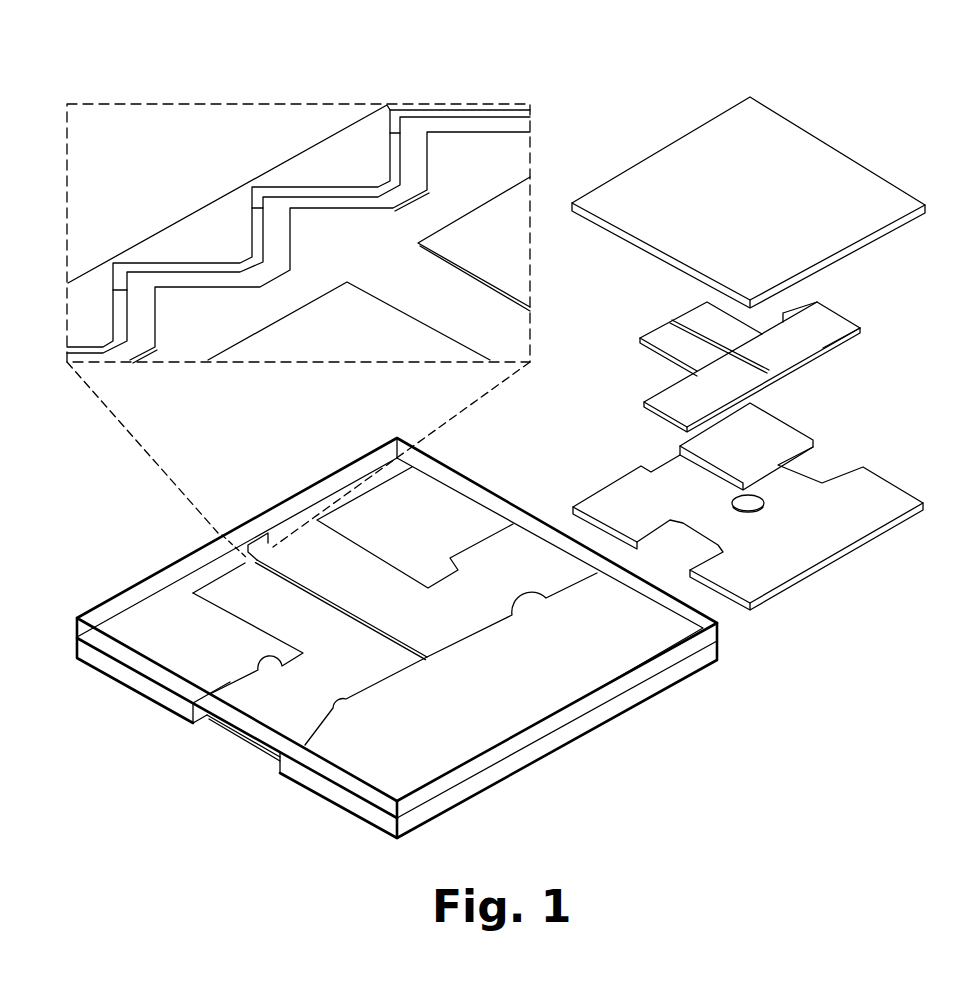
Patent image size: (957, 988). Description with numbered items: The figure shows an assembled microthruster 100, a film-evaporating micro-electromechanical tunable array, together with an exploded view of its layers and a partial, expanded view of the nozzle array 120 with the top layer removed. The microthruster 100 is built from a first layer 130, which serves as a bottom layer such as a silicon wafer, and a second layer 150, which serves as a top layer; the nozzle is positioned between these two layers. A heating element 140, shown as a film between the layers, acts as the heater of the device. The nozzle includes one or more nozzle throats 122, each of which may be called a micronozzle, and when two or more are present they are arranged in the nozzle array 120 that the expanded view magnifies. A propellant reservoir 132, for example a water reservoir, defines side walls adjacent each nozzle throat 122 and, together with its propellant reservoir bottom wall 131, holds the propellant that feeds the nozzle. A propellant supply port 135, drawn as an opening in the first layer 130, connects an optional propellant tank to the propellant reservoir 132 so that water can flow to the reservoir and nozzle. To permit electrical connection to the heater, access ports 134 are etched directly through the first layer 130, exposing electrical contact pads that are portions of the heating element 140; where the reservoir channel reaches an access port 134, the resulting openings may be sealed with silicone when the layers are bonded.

The microthruster 100 is at (857, 663).
The nozzle array 120 is at (123, 176).
The nozzle throat 122 is at (254, 172).
The first layer 130 is at (748, 531).
The propellant reservoir bottom wall 131 is at (363, 438).
The propellant reservoir 132 is at (390, 253).
The access port 134 is at (206, 729).
The propellant supply port 135 is at (747, 520).
The heating element 140 is at (858, 388).
The second layer 150 is at (737, 128).